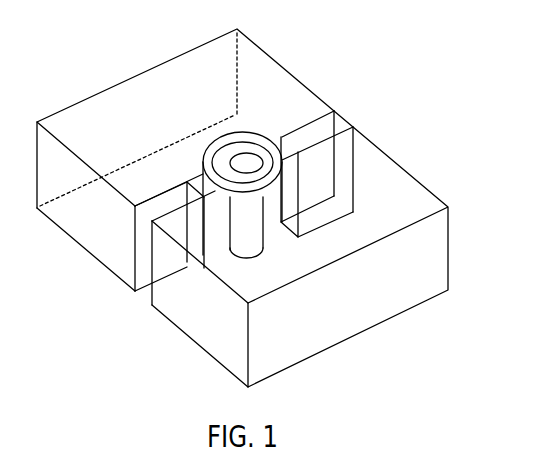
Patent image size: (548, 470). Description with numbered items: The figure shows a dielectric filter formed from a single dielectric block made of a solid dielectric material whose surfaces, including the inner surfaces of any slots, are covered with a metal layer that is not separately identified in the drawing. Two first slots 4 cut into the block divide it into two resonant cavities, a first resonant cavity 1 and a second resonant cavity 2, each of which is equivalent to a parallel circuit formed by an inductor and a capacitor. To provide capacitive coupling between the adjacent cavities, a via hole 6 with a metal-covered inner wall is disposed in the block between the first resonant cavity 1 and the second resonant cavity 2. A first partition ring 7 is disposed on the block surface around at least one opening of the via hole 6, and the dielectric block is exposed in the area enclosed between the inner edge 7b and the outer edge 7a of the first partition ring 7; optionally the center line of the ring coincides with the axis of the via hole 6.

The first resonant cavity 1 is at (260, 80).
The second resonant cavity 2 is at (377, 172).
The first slot 4 is at (323, 133).
The via hole 6 is at (250, 165).
The first partition ring 7 is at (282, 165).
The outer edge of the first partition ring 7a is at (282, 180).
The inner edge of the first partition ring 7b is at (242, 147).